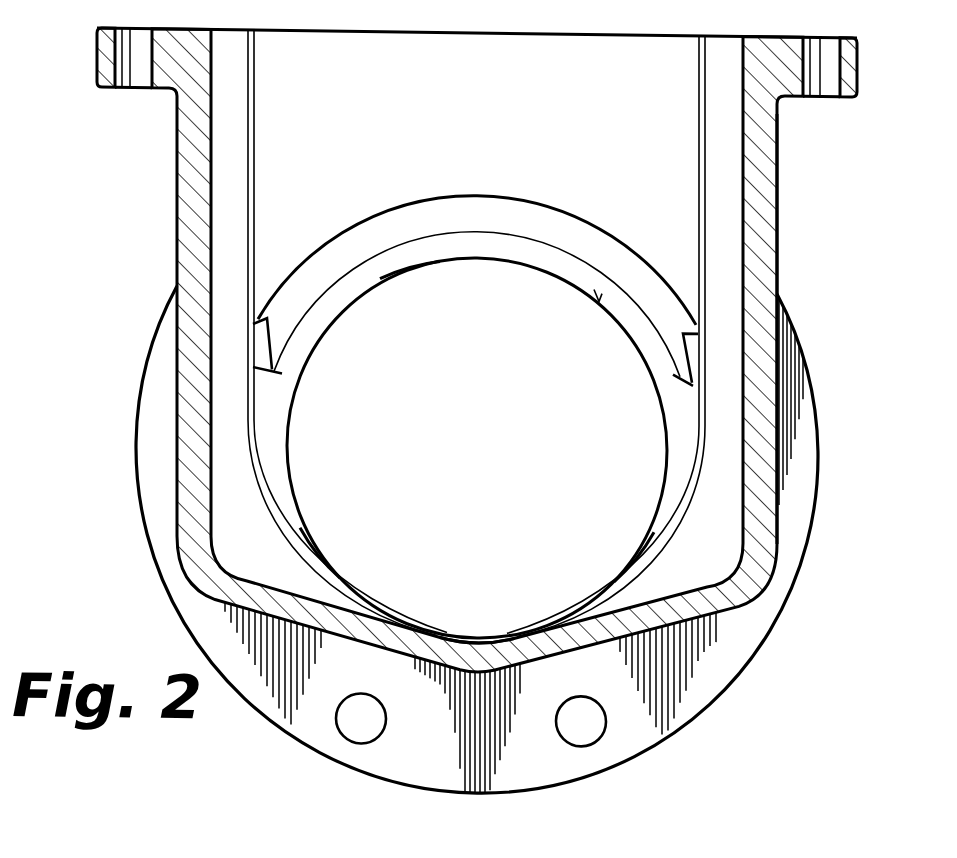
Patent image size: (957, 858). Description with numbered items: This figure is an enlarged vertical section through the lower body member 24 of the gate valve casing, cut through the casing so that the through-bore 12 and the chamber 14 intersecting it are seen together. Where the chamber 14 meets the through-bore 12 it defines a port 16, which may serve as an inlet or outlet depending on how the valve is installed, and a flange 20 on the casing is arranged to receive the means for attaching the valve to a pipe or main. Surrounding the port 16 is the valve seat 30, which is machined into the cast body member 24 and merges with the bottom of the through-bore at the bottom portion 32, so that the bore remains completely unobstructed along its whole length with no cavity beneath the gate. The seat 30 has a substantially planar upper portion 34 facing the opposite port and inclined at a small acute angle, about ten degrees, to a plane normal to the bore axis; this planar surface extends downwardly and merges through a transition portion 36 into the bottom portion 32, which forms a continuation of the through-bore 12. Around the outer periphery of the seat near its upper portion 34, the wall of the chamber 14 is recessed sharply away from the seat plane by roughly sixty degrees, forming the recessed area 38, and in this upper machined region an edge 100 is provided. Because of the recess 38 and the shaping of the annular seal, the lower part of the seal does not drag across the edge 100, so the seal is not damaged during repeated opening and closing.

The through-bore 12 is at (513, 503).
The chamber 14 is at (642, 176).
The port 16 is at (640, 385).
The flange 20 is at (754, 650).
The lower body member 24 is at (779, 200).
The valve seat 30 is at (597, 298).
The bottom portion 32 is at (453, 637).
The upper portion 34 is at (407, 258).
The transition portion 36 is at (313, 558).
The recessed area 38 is at (408, 218).
The edge 100 is at (502, 231).